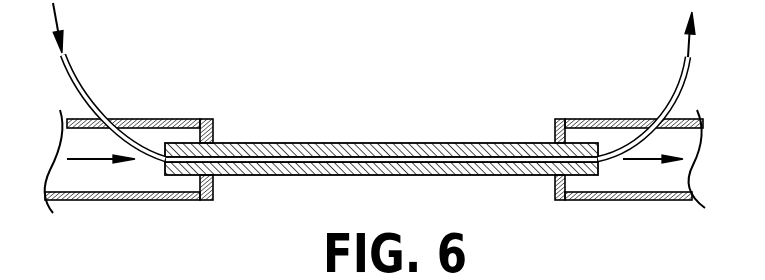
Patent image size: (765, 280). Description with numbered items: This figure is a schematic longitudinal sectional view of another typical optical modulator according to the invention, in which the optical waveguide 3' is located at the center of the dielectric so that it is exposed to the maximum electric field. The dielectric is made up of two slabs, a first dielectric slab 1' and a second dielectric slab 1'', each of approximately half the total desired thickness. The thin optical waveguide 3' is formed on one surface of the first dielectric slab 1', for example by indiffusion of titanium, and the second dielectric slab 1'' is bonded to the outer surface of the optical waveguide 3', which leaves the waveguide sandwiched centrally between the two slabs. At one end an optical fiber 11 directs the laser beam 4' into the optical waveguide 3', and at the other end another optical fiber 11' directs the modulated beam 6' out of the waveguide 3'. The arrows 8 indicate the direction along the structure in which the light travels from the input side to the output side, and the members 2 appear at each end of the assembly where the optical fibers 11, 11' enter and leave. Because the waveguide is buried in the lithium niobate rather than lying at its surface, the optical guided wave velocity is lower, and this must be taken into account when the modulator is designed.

The first dielectric slab 1' is at (381, 184).
The second dielectric slab 1'' is at (381, 127).
The optical waveguide 3' is at (381, 130).
The pipe flange / coupling 2 is at (173, 200).
The optical fiber 11 is at (114, 107).
The optical fiber 11' is at (643, 103).
The laser beam 4' is at (90, 28).
The modulated beam 6' is at (713, 34).
The main flow direction arrow 8 is at (102, 162).